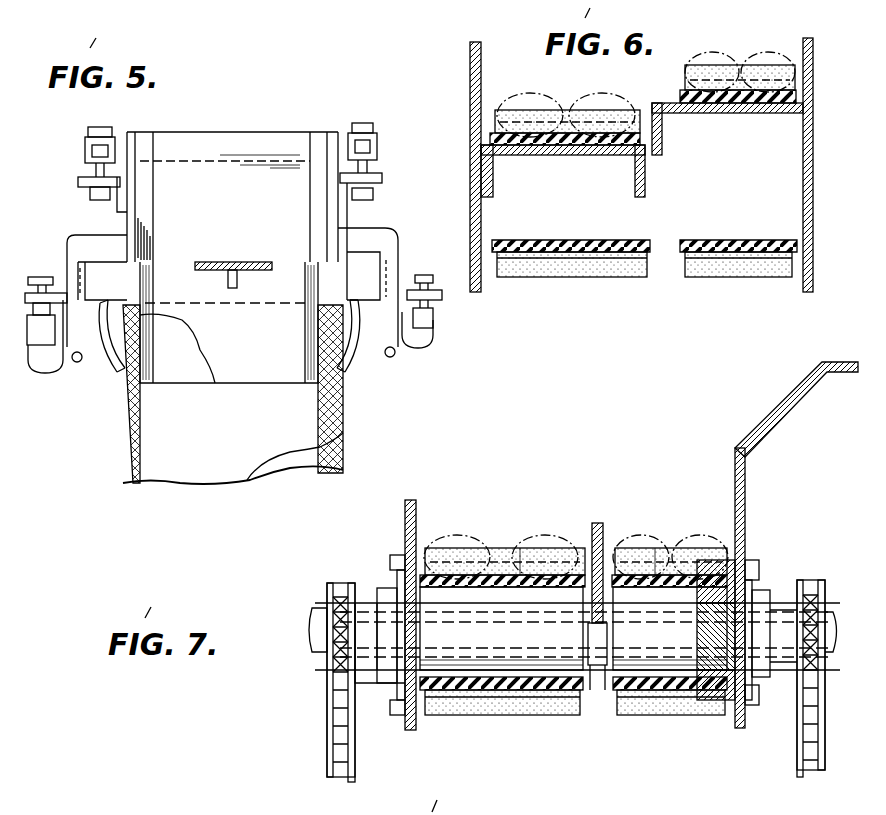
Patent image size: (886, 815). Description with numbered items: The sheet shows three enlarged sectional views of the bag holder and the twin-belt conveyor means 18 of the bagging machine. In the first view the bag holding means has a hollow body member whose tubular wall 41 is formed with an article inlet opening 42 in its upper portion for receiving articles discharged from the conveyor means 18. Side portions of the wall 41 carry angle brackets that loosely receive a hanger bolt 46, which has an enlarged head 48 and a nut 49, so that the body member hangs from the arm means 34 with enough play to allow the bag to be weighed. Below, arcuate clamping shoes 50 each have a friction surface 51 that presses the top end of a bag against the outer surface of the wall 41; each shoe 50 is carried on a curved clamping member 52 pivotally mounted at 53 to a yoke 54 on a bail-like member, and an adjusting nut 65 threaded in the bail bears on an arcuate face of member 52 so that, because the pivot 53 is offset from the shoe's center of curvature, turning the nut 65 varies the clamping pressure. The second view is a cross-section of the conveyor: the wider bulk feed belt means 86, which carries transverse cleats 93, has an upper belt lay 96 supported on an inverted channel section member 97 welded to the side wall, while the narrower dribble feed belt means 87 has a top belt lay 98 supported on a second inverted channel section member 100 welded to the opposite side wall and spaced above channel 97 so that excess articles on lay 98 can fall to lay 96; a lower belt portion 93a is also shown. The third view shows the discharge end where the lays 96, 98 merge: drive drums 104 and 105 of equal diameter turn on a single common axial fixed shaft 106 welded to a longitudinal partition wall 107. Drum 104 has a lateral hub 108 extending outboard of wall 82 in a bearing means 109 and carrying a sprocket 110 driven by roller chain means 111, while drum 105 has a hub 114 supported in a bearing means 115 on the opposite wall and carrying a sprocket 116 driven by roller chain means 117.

In FIG. 6, the conveyor means 18 is at (468, 62).
In FIG. 7, the conveyor means 18 is at (748, 414).
In FIG. 5, the arm means 34 is at (377, 148).
In FIG. 5, the tubular wall 41 is at (274, 132).
In FIG. 5, the article inlet opening 42 is at (175, 260).
In FIG. 5, the hanger bolt 46 is at (88, 166).
In FIG. 5, the enlarged head 48 is at (90, 128).
In FIG. 5, the nut 49 is at (365, 200).
In FIG. 5, the clamping shoe 50 is at (112, 365).
In FIG. 5, the friction surface 51 is at (142, 406).
In FIG. 5, the clamping member 52 is at (46, 365).
In FIG. 5, the pivotal mounting 53 is at (74, 362).
In FIG. 5, the yoke 54 is at (433, 318).
In FIG. 5, the adjusting nut 65 is at (42, 277).
In FIG. 6, the wall 82 is at (470, 100).
In FIG. 7, the wall 82 is at (405, 512).
In FIG. 6, the belt means 86 is at (520, 150).
In FIG. 7, the belt means 86 is at (526, 575).
In FIG. 6, the belt means 87 is at (731, 88).
In FIG. 7, the belt means 87 is at (626, 575).
In FIG. 6, the cleats 93 is at (555, 108).
In FIG. 7, the cleats 93 is at (495, 560).
In FIG. 6, the lower plate 93a is at (702, 262).
In FIG. 7, the lower plate 93a is at (656, 562).
In FIG. 6, the upper belt lay 96 is at (586, 145).
In FIG. 7, the upper belt lay 96 is at (470, 560).
In FIG. 6, the inverted channel section member 97 is at (560, 155).
In FIG. 6, the top belt lay 98 is at (720, 102).
In FIG. 7, the top belt lay 98 is at (680, 575).
In FIG. 6, the inverted channel section member 100 is at (766, 113).
In FIG. 7, the drive drum 104 is at (470, 662).
In FIG. 7, the drive drum 105 is at (665, 662).
In FIG. 7, the axial fixed shaft 106 is at (596, 640).
In FIG. 7, the longitudinal partition wall 107 is at (598, 523).
In FIG. 7, the lateral hub 108 is at (378, 588).
In FIG. 7, the bearing means 109 is at (385, 684).
In FIG. 7, the sprocket 110 is at (327, 606).
In FIG. 7, the drive roller chain means 111 is at (327, 725).
In FIG. 7, the hub 114 is at (775, 680).
In FIG. 7, the bearing means 115 is at (766, 592).
In FIG. 7, the sprocket 116 is at (810, 586).
In FIG. 7, the drive roller chain means 117 is at (825, 774).